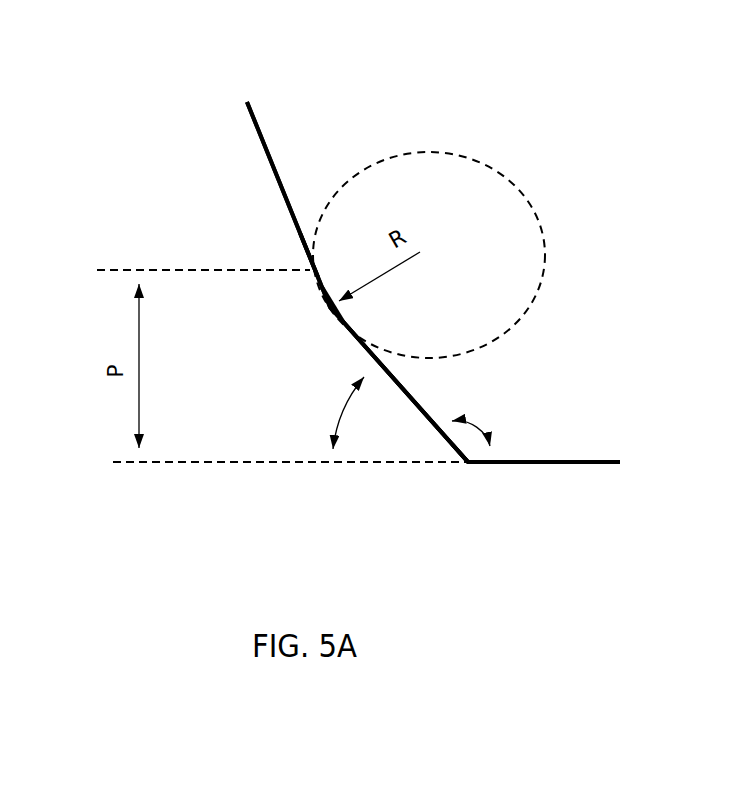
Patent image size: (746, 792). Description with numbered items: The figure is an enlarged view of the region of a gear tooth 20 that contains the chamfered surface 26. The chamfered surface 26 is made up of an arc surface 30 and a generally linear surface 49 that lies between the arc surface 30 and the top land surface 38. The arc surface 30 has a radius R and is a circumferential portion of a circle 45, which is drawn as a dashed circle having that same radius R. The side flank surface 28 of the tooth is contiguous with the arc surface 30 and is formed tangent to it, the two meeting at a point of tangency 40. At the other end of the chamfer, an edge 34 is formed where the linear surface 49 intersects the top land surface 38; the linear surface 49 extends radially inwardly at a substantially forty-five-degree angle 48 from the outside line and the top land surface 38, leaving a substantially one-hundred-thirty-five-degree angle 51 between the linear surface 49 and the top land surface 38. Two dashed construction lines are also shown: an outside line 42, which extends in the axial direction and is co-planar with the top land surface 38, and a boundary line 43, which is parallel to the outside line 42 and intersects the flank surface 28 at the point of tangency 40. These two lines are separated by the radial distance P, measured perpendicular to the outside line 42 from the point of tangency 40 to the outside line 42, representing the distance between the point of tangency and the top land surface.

The gear tooth 20 is at (265, 155).
The side flank surface 28 is at (258, 140).
The chamfered surface 26 is at (337, 327).
The arc surface 30 is at (337, 312).
The point of tangency 40 is at (307, 270).
The edge 34 is at (468, 463).
The top land surface 38 is at (580, 465).
The outside line 42 is at (190, 462).
The boundary line 43 is at (117, 270).
The circle 45 is at (517, 183).
The 45-degree angle 48 is at (330, 443).
The linear surface 49 is at (407, 392).
The 135-degree angle 51 is at (493, 452).